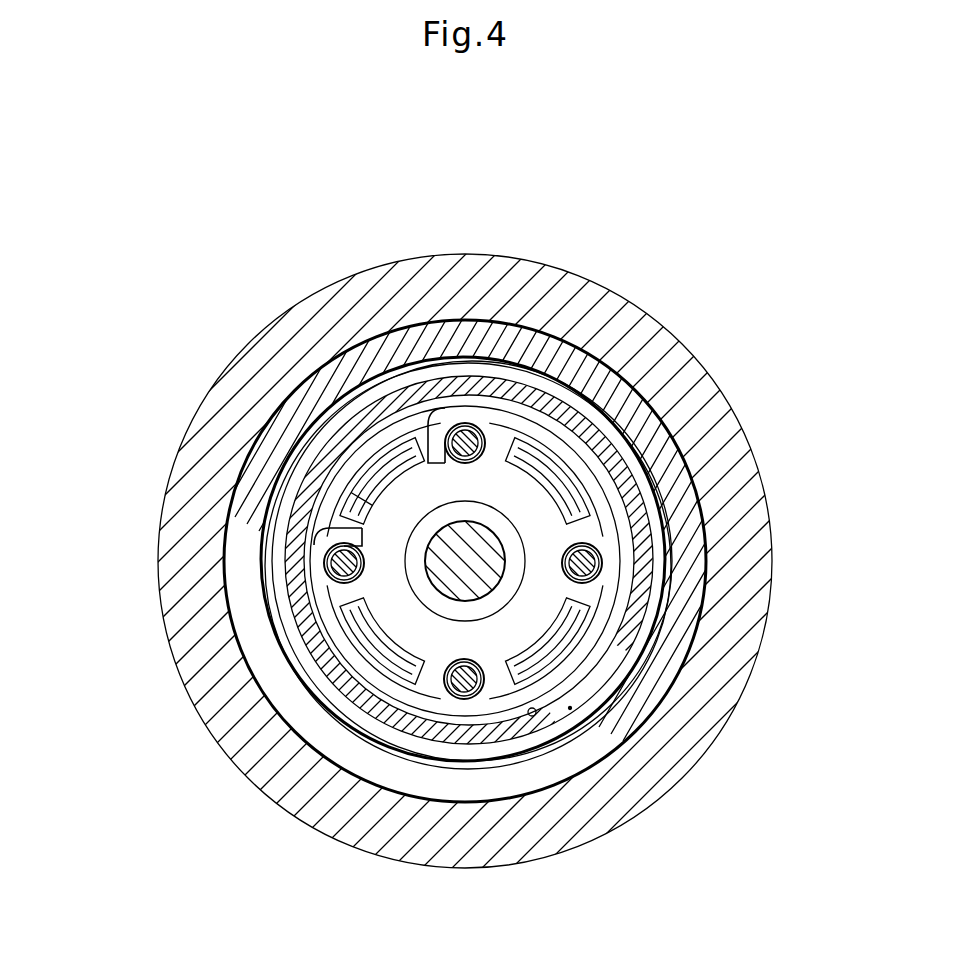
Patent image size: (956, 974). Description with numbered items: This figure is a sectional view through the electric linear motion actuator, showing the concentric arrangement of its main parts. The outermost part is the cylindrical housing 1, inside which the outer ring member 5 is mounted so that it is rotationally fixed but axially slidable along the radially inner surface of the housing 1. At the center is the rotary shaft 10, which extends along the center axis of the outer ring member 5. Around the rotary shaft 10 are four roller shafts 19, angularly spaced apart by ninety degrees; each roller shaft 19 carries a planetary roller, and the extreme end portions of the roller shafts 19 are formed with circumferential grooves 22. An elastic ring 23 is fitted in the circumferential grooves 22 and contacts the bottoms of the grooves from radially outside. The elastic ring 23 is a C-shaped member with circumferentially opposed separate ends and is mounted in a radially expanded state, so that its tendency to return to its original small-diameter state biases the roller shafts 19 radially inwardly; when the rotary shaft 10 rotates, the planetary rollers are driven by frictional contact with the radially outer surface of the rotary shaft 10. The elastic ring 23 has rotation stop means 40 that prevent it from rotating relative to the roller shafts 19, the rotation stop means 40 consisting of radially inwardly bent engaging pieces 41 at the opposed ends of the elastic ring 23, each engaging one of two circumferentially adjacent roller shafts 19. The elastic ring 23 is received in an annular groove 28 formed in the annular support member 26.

The housing 1 is at (262, 345).
The outer ring member 5 is at (350, 355).
The rotary shaft 10 is at (483, 540).
The roller shaft 19 is at (468, 440).
The circumferential groove 22 is at (602, 547).
The elastic ring 23 is at (290, 680).
The support member 26 is at (570, 708).
The annular groove 28 is at (532, 716).
The rotation stop means 40 is at (305, 545).
The engaging piece 41 is at (430, 438).